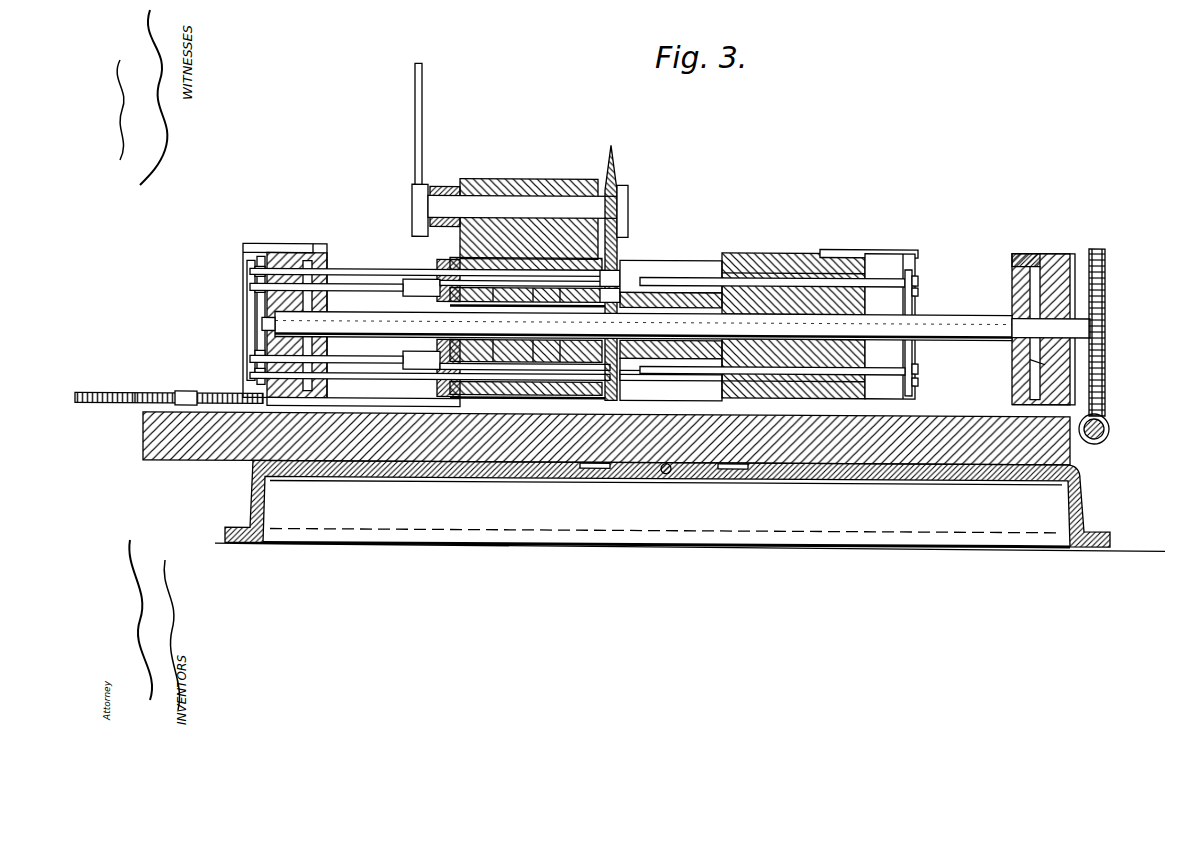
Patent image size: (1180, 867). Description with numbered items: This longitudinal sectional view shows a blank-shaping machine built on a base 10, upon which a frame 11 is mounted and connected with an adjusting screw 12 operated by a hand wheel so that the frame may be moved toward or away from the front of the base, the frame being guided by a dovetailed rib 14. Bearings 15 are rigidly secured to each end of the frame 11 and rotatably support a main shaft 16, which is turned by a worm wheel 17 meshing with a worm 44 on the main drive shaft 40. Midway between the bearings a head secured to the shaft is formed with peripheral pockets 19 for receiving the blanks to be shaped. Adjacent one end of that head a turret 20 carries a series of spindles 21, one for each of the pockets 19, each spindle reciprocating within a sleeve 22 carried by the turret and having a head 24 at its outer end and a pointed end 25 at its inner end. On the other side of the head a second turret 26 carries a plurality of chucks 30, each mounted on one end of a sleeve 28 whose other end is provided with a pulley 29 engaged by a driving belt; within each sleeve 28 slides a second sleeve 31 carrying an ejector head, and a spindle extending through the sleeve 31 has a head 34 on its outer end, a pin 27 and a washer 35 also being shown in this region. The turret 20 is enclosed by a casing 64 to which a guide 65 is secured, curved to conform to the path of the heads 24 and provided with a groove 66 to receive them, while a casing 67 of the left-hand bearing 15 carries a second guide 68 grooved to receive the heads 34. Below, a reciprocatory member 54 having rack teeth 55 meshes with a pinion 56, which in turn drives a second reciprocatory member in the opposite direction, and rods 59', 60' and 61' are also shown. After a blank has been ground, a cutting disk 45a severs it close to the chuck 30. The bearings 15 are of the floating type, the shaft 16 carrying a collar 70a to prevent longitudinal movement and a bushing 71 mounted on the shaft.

The base 10 is at (690, 505).
The frame 11 is at (232, 462).
The adjusting screw 12 is at (660, 468).
The dovetailed rib 14 is at (664, 485).
The bearings 15 is at (290, 252).
The main shaft 16 is at (630, 290).
The worm wheel 17 is at (1104, 284).
The peripheral pockets 19 is at (685, 282).
The turret 20 is at (882, 272).
The spindles 21 is at (832, 272).
The sleeve 22 is at (745, 264).
The head 24 is at (918, 278).
The pointed end 25 is at (722, 262).
The second turret 26 is at (552, 300).
The pin 27 is at (478, 255).
The sleeve 28 is at (552, 300).
The pulley 29 is at (442, 284).
The chucks 30 is at (612, 272).
The second sleeve 31 is at (528, 300).
The head 34 is at (250, 374).
The washer 35 is at (480, 300).
The main drive shaft 40 is at (1106, 422).
The worm 44 is at (1099, 433).
The cutting disk 45a is at (615, 152).
The reciprocatory member 54 is at (169, 385).
The rack teeth 55 is at (137, 393).
The pinion 56 is at (189, 392).
The rod 59' is at (401, 318).
The rod 60' is at (430, 305).
The rod 61' is at (946, 338).
The casing 64 is at (795, 264).
The guide 65 is at (448, 262).
The groove 66 is at (915, 347).
The casing 67 is at (322, 244).
The second guide 68 is at (510, 270).
The collar 70a is at (1048, 358).
The bushing 71 is at (1045, 298).